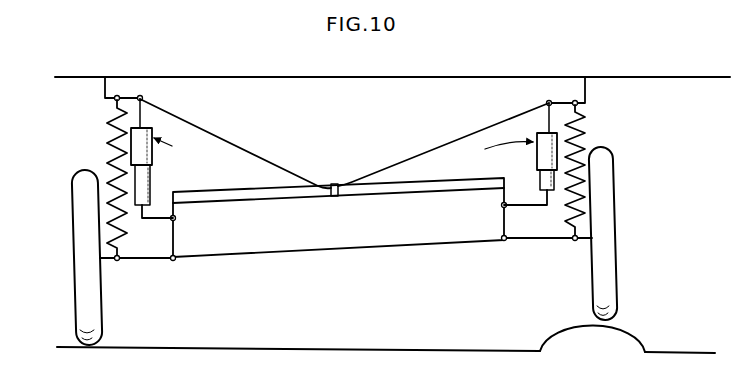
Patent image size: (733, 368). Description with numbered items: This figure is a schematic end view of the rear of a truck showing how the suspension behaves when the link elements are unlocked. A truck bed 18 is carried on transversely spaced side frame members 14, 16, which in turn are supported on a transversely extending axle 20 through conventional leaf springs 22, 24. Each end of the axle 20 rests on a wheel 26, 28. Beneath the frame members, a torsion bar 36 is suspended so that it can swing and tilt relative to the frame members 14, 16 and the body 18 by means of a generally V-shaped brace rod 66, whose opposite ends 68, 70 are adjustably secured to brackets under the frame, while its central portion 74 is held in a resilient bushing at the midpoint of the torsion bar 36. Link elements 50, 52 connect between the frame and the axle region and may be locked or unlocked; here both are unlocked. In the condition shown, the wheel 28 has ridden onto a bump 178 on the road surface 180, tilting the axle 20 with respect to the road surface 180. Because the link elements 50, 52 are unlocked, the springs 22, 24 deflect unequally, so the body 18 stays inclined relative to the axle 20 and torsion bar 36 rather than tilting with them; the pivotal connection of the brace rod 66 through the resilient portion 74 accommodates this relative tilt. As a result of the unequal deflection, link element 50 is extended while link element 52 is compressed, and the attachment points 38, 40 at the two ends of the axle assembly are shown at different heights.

The side frame member 14 is at (104, 88).
The side frame member 16 is at (587, 93).
The truck bed 18 is at (357, 76).
The axle 20 is at (323, 250).
The leaf spring 22 is at (106, 134).
The leaf spring 24 is at (586, 125).
The wheel 26 is at (73, 238).
The wheel 28 is at (617, 263).
The torsion bar 36 is at (412, 189).
The left pivot link 38 is at (176, 231).
The right pivot link 40 is at (503, 219).
The link element 50 is at (154, 177).
The link element 52 is at (533, 163).
The brace rod 66 is at (267, 160).
The end of brace rod 68 is at (180, 118).
The end of brace rod 70 is at (499, 122).
The portion of brace rod 74 is at (336, 183).
The bump 178 is at (631, 336).
The road surface 180 is at (353, 347).